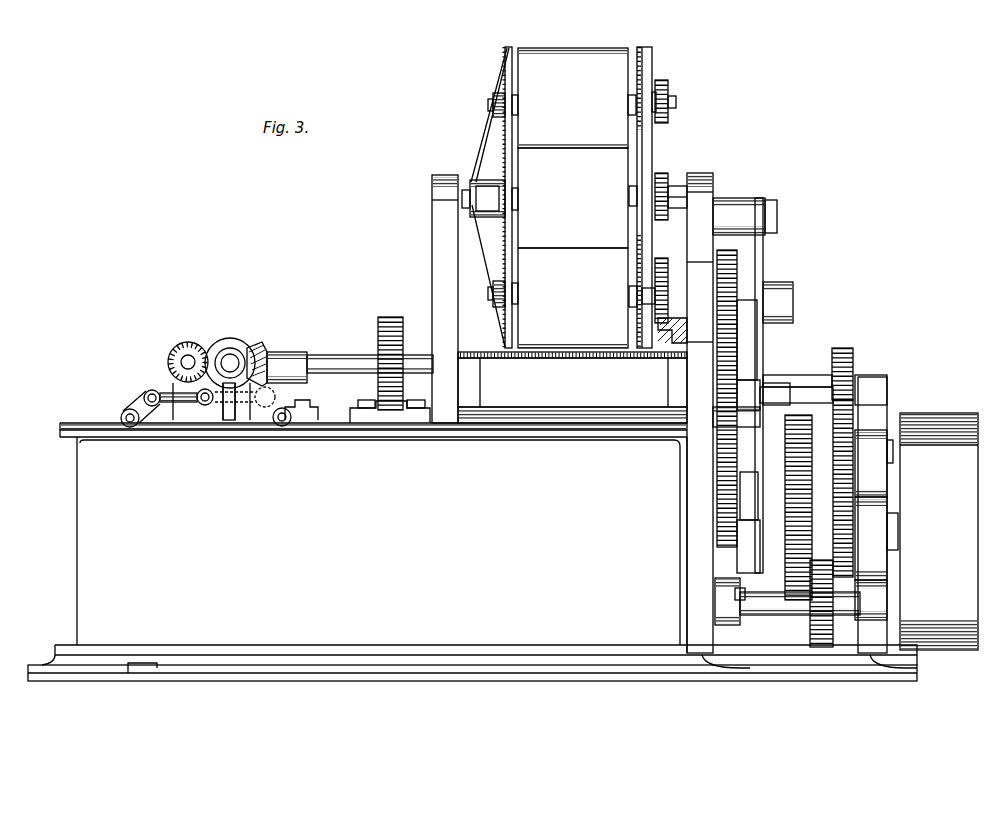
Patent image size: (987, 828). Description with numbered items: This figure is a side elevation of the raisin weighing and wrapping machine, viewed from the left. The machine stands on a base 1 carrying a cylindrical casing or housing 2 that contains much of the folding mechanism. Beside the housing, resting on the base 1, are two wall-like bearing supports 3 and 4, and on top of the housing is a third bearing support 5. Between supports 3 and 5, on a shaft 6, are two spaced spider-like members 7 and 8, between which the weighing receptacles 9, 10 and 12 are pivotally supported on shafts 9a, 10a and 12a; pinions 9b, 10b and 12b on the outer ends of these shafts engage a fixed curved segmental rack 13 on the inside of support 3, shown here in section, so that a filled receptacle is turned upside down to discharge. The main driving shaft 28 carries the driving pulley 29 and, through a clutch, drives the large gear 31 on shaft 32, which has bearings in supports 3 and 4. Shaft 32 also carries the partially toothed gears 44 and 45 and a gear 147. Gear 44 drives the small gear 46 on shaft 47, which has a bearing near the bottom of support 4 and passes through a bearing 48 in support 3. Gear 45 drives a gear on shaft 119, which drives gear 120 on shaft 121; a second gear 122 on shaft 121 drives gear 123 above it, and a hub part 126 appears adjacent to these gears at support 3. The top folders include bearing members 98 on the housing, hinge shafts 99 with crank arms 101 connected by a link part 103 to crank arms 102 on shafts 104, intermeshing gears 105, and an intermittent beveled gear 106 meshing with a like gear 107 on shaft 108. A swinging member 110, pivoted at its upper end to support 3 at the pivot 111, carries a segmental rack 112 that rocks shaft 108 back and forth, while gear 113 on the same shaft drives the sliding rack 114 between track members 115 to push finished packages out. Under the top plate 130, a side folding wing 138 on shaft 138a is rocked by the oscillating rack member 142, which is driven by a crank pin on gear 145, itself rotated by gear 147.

The base 1 is at (300, 666).
The cylindrical casing 2 is at (95, 506).
The bearing support 3 is at (700, 205).
The bearing support 4 is at (870, 410).
The bearing support 5 is at (442, 231).
The shaft 6 is at (685, 190).
The spider-like member 7 is at (497, 151).
The spider-like member 8 is at (645, 72).
The receptacle 9 is at (570, 198).
The shaft 9a is at (632, 197).
The pinion 9b is at (663, 176).
The receptacle 10 is at (574, 98).
The shaft 10a is at (670, 104).
The pinion 10b is at (668, 86).
The receptacle 12 is at (570, 298).
The shaft 12a is at (497, 292).
The pinion 12b is at (641, 298).
The segmental rack 13 is at (664, 262).
The main driving shaft 28 is at (978, 531).
The driving pulley 29 is at (953, 428).
The large gear 31 is at (796, 384).
The shaft 32 is at (899, 531).
The gear 44 is at (820, 393).
The gear 45 is at (862, 402).
The small gear 46 is at (822, 626).
The shaft 47 is at (770, 616).
The bearing 48 is at (722, 584).
The bearing member 98 is at (300, 406).
The bearing shaft 99 is at (122, 412).
The crank arm 101 is at (150, 391).
The crank arm 102 is at (200, 391).
The link 103 is at (185, 403).
The shaft 104 is at (188, 356).
The intermeshing gear 105 is at (194, 344).
The intermittent beveled gear 106 is at (232, 340).
The intermittent gear 107 is at (282, 354).
The shaft 108 is at (339, 360).
The swinging member 110 is at (758, 262).
The shaft 111 is at (735, 214).
The segmental rack 112 is at (743, 366).
The gear 113 is at (390, 320).
The sliding rack 114 is at (393, 412).
The track member 115 is at (362, 415).
The shaft 119 is at (894, 451).
The gear 120 is at (843, 356).
The shaft 121 is at (775, 396).
The gear 122 is at (752, 386).
The gear 123 is at (723, 268).
The shaft 126 is at (776, 302).
The top plate 130 is at (535, 357).
The side folding wing 138 is at (602, 382).
The shaft 138a is at (716, 432).
The oscillating rack member 142 is at (740, 546).
The gear 145 is at (743, 496).
The gear 147 is at (740, 601).